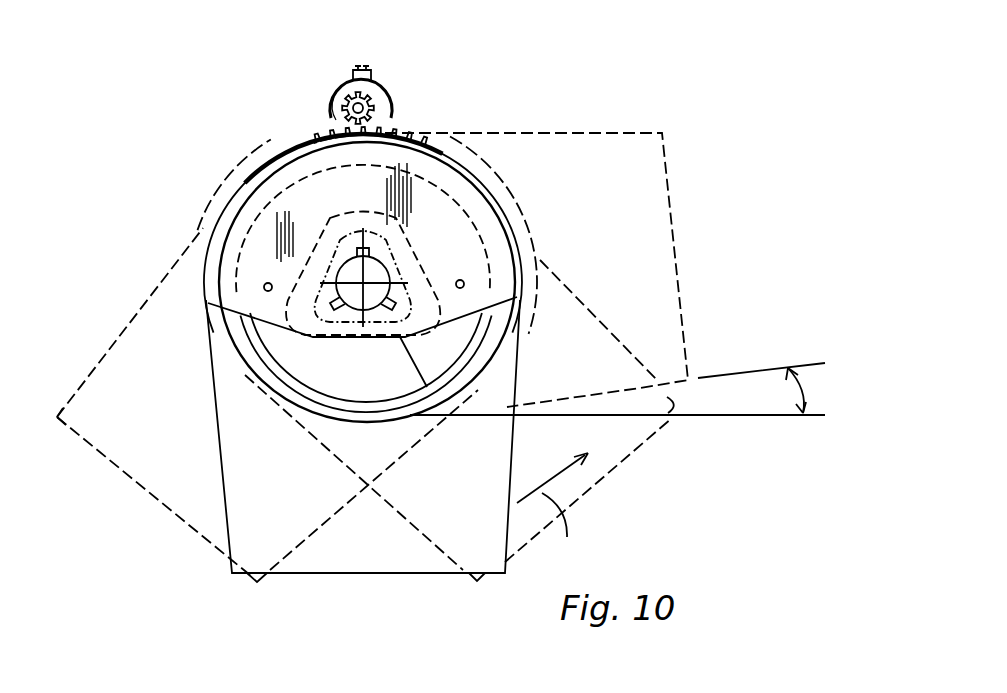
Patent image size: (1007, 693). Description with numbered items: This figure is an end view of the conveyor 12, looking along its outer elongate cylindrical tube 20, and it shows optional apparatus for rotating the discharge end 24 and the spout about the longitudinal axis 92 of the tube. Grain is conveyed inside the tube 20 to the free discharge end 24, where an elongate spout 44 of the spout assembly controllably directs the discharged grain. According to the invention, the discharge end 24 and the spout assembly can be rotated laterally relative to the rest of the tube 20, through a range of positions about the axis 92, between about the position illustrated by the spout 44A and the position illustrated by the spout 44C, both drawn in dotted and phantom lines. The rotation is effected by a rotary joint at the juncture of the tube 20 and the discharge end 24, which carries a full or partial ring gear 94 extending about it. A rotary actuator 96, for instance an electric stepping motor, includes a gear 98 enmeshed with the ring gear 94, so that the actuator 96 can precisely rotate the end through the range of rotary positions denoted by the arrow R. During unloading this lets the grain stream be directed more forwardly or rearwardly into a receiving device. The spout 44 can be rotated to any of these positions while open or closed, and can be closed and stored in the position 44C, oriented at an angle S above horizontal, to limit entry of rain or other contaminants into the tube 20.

The conveyor 12 is at (555, 70).
The outer elongate cylindrical tube 20 is at (252, 366).
The free discharge end 24 is at (290, 158).
The elongate spout 44 is at (370, 573).
The spout position 44A is at (137, 492).
The spout position 44C is at (673, 223).
The longitudinal axis 92 is at (362, 290).
The ring gear 94 is at (397, 130).
The rotary actuator 96 is at (381, 84).
The gear 98 is at (338, 102).
The angle S is at (802, 392).
The arrow R is at (552, 511).